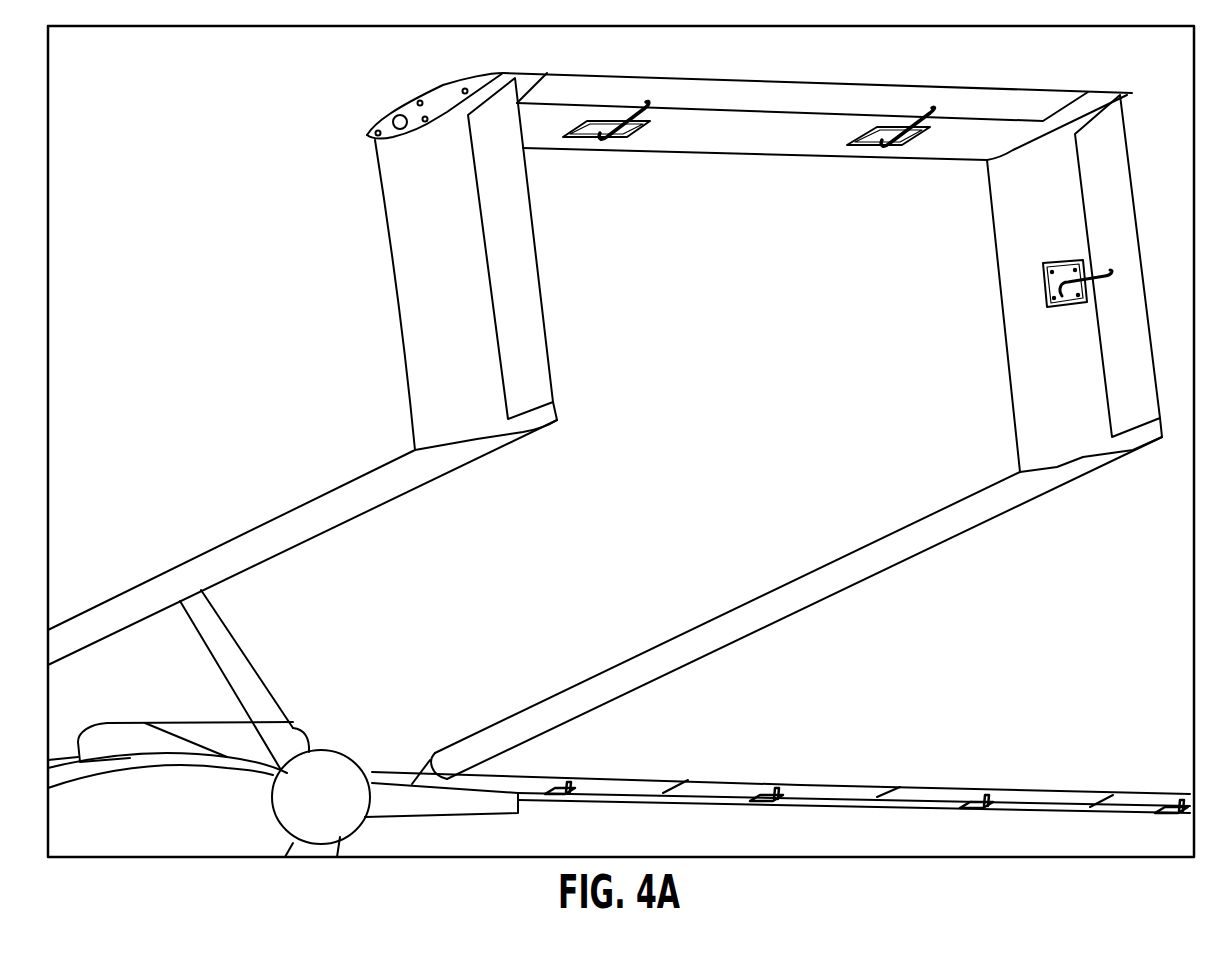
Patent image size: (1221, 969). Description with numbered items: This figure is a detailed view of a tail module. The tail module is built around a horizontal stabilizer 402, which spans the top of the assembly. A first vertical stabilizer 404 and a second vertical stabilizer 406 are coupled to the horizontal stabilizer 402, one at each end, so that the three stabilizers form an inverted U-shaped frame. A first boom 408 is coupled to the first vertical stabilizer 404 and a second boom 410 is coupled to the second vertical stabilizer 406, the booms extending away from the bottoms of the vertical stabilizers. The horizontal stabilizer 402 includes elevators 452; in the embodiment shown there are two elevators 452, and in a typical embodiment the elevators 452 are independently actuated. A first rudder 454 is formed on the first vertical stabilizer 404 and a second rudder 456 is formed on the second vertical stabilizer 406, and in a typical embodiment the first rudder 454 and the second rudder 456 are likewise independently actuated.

The horizontal stabilizer 402 is at (683, 138).
The first vertical stabilizer 404 is at (408, 328).
The second vertical stabilizer 406 is at (1007, 263).
The first boom 408 is at (282, 540).
The second boom 410 is at (958, 520).
The elevators 452 is at (683, 90).
The first rudder 454 is at (520, 263).
The second rudder 456 is at (1112, 158).